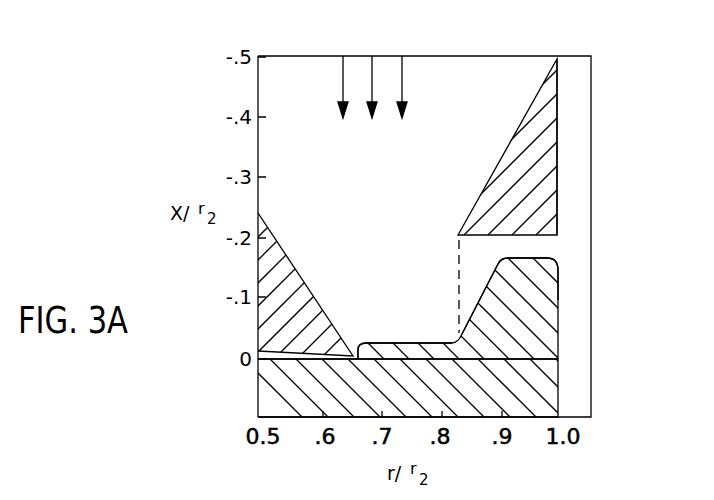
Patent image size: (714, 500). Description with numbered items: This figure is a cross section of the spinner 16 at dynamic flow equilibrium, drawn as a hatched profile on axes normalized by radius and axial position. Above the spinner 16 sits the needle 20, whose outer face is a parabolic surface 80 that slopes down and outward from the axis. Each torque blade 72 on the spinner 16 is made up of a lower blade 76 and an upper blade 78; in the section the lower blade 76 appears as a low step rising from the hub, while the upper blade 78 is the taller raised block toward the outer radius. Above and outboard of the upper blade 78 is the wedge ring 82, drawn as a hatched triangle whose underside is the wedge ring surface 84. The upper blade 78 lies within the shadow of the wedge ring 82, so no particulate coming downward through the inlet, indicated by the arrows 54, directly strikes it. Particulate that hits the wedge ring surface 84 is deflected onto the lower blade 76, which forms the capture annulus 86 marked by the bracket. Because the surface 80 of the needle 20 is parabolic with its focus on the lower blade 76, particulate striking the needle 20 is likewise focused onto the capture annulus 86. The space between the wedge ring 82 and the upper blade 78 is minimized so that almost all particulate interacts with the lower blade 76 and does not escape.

The spinner 16 is at (558, 398).
The needle 20 is at (258, 268).
The inlet flow direction arrows 54 is at (405, 79).
The torque blade 72 is at (558, 332).
The lower blade 76 is at (356, 344).
The upper blade 78 is at (558, 285).
The parabolic surface 80 is at (263, 229).
The wedge ring 82 is at (557, 150).
The wedge ring surface 84 is at (520, 121).
The capture annulus 86 is at (453, 334).